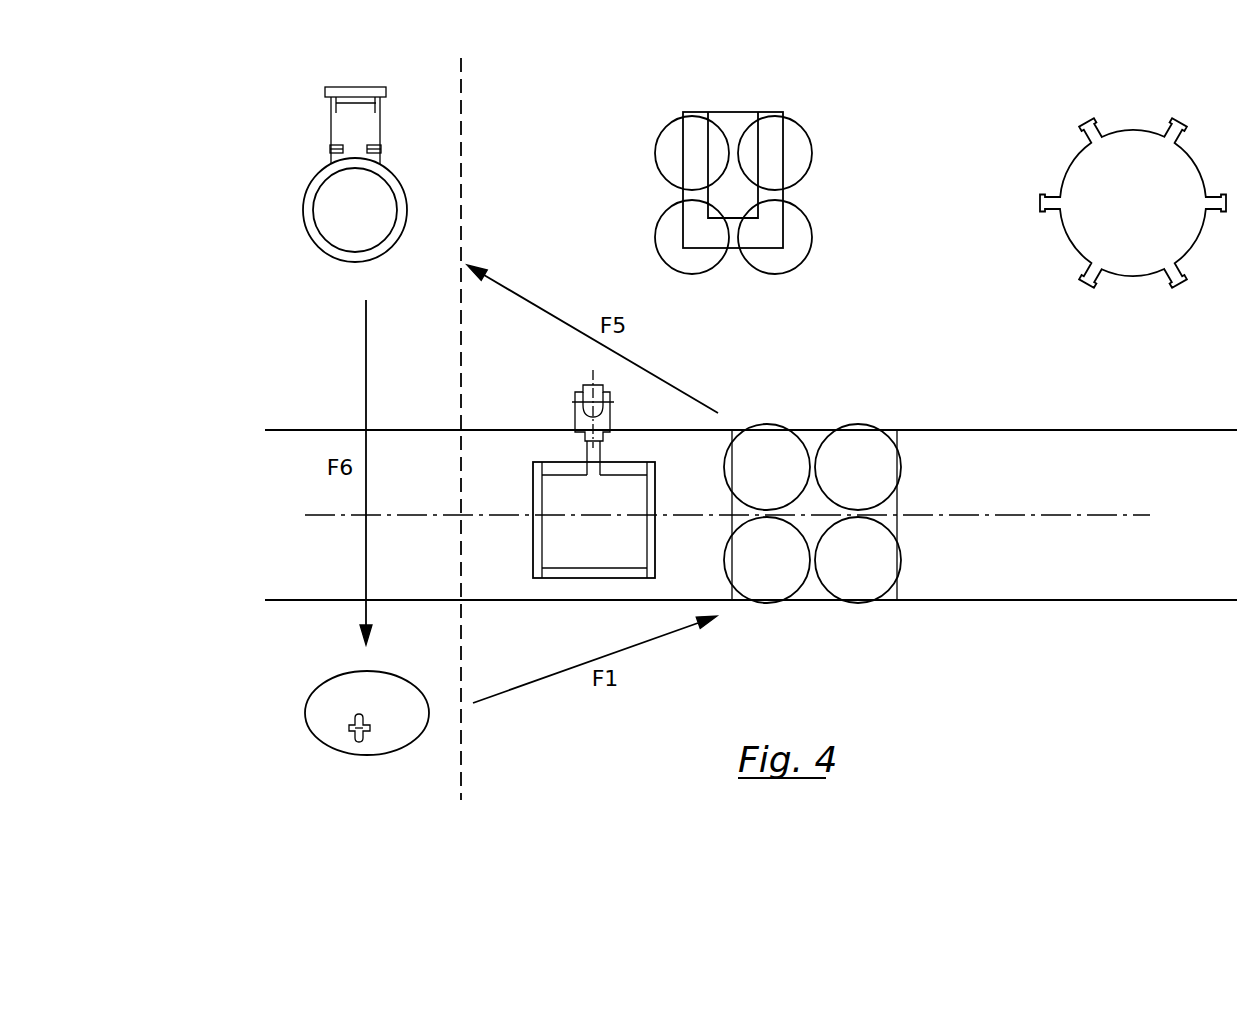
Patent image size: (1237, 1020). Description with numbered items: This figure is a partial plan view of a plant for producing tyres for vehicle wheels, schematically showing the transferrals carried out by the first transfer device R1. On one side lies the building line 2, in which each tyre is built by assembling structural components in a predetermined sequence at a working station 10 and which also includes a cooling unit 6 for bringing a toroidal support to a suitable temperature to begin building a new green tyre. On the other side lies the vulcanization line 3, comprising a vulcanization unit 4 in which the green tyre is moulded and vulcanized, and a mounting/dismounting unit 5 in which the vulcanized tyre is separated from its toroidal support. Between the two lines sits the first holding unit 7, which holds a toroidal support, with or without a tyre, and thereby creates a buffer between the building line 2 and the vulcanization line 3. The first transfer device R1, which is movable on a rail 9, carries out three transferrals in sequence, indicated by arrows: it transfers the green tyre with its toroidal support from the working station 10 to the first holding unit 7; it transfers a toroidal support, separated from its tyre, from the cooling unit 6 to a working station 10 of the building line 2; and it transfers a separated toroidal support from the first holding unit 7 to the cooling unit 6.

The building line 2 is at (238, 118).
The vulcanization line 3 is at (945, 100).
The vulcanization unit 4 is at (1088, 222).
The mounting/dismounting unit 5 is at (728, 128).
The cooling unit 6 is at (365, 137).
The first holding unit 7 is at (814, 588).
The rail 9 is at (1046, 587).
The working station 10 is at (318, 707).
The first transfer device R1 is at (575, 410).